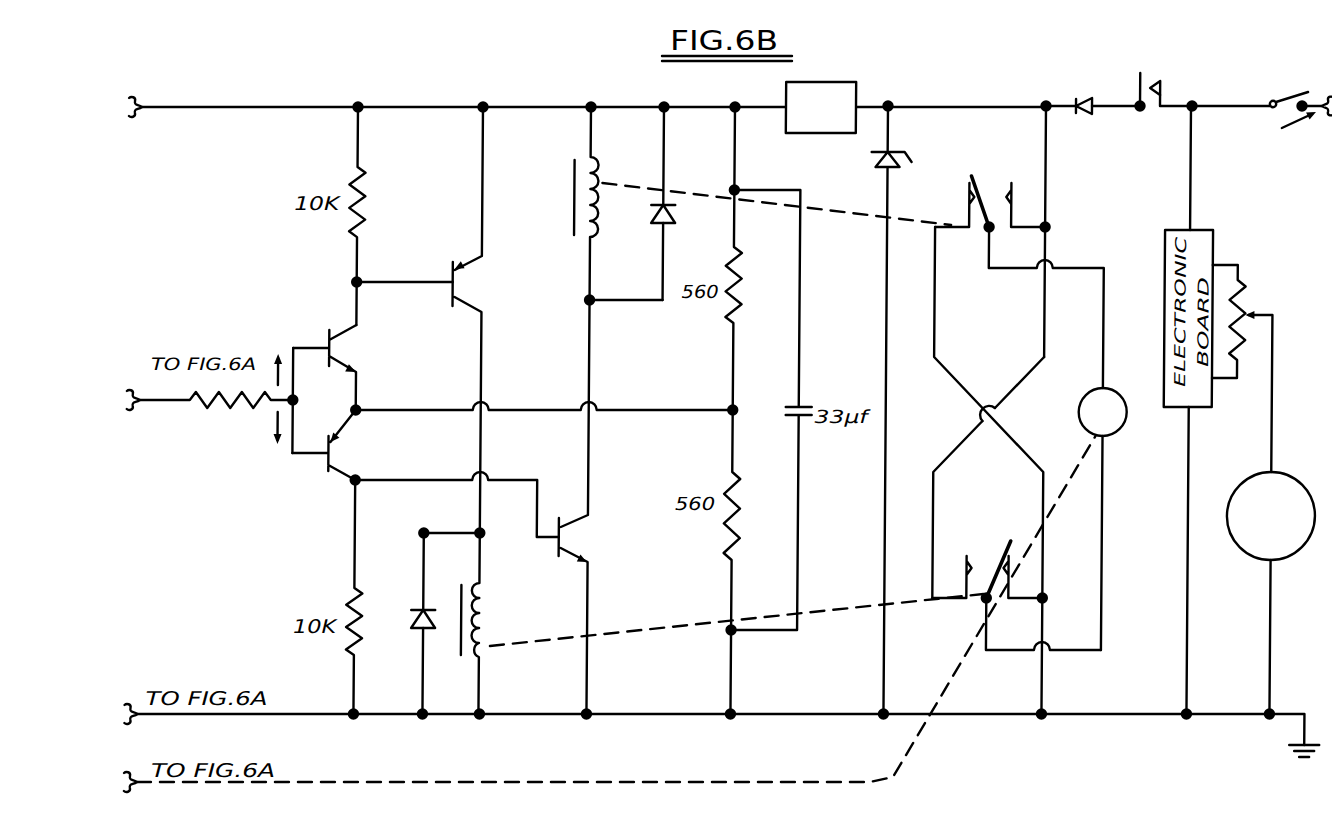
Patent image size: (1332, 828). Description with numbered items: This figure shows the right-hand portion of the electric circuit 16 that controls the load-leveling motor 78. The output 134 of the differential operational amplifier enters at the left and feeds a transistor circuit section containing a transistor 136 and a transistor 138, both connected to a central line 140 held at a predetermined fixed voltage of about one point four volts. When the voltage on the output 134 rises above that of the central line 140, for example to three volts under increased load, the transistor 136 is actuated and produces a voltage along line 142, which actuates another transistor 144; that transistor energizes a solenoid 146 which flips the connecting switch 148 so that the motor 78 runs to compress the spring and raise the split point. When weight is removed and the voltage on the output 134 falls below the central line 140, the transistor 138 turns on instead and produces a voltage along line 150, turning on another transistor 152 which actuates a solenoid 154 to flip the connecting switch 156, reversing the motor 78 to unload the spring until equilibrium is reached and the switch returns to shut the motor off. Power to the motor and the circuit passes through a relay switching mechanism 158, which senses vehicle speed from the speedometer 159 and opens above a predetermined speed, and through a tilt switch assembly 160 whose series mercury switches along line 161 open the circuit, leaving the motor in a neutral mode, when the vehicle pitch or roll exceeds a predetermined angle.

The electric circuit 16 is at (596, 98).
The motor 78 is at (1118, 431).
The output 134 is at (276, 405).
The transistor 136 is at (325, 340).
The transistor 138 is at (327, 462).
The central line 140 is at (536, 408).
The line 142 is at (405, 280).
The transistor 144 is at (464, 266).
The solenoid 146 is at (494, 620).
The connecting switch 148 is at (983, 563).
The line 150 is at (540, 498).
The transistor 152 is at (578, 537).
The solenoid 154 is at (569, 176).
The connecting switch 156 is at (988, 183).
The relay switching mechanism 158 is at (1151, 78).
The speedometer 159 is at (1252, 558).
The tilt switch assembly 160 is at (1298, 97).
The line 161 is at (1235, 95).